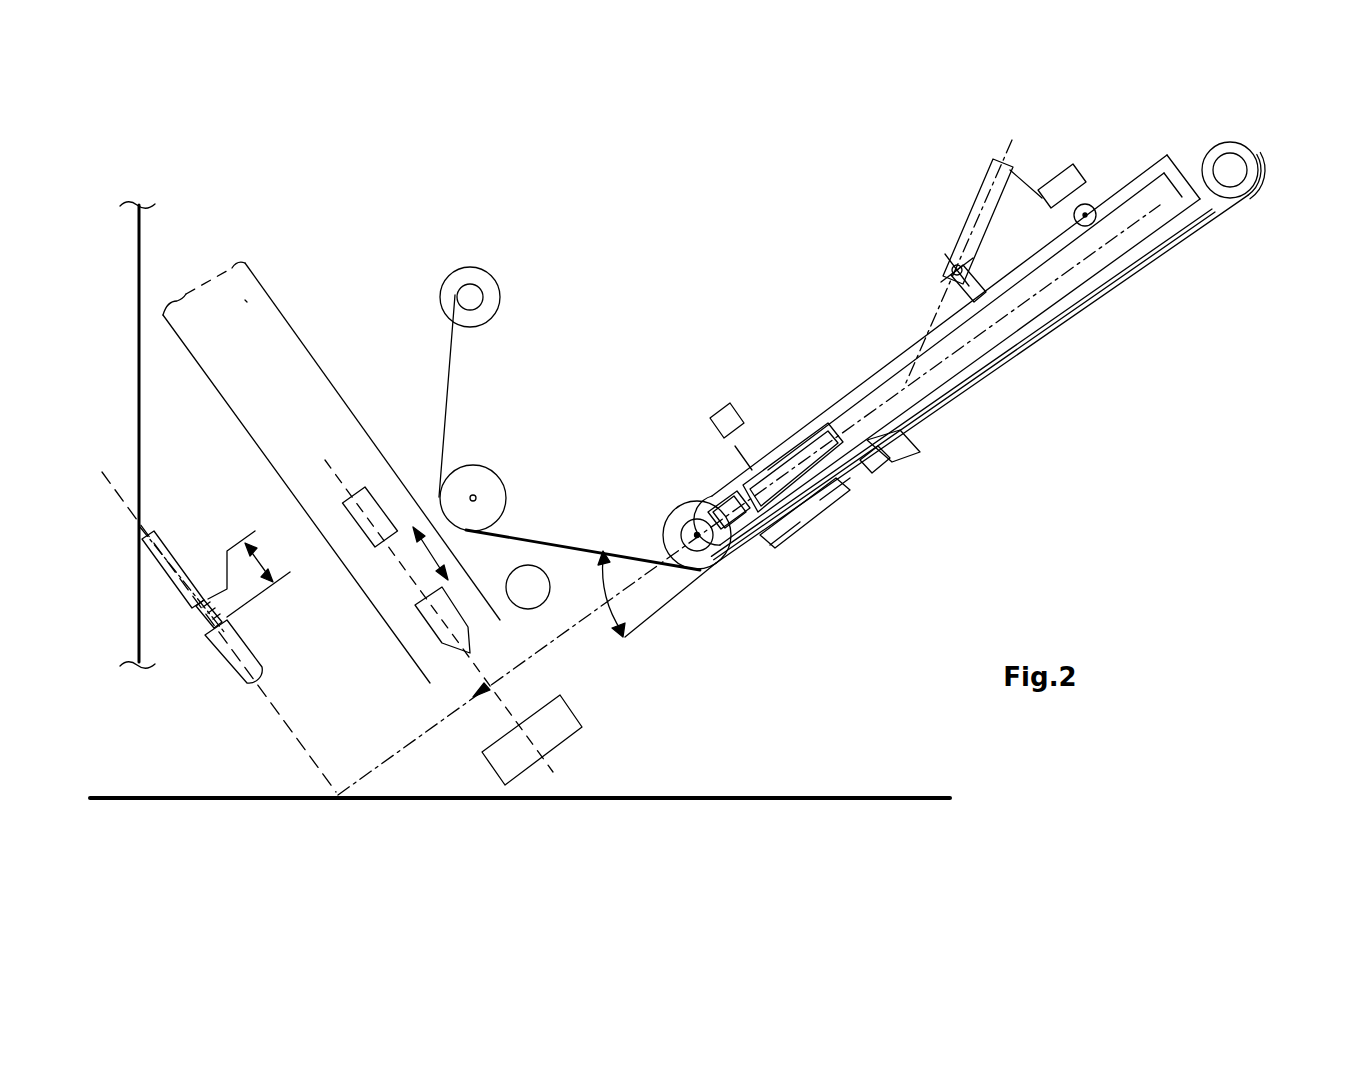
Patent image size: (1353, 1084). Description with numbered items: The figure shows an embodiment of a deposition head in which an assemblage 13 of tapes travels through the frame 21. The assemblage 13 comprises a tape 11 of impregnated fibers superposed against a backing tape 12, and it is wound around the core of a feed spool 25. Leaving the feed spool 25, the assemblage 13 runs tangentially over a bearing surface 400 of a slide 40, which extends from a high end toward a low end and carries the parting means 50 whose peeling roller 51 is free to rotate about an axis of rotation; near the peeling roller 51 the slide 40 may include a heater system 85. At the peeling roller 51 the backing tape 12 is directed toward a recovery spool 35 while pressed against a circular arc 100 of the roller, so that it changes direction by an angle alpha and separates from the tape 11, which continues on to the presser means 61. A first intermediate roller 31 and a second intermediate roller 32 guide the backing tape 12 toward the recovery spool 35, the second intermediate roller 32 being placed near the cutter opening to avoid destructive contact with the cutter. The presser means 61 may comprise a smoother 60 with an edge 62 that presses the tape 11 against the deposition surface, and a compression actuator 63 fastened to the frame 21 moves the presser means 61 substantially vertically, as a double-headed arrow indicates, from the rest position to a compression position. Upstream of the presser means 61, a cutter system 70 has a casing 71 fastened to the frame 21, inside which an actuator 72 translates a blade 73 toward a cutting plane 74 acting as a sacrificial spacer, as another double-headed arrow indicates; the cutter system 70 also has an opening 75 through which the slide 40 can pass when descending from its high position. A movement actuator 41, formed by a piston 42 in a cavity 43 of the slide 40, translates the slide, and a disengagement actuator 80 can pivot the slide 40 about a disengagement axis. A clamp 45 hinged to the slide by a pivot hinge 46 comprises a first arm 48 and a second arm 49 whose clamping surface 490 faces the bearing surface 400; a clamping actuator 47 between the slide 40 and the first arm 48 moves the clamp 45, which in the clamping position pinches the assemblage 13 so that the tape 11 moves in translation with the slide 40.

The tape of impregnated fibers 11 is at (655, 615).
The backing tape 12 is at (585, 548).
The assemblage of tapes 13 is at (1197, 241).
The frame 21 is at (139, 607).
The feed spool 25 is at (1262, 168).
The first intermediate roller 31 is at (503, 480).
The second intermediate roller 32 is at (528, 565).
The recovery spool 35 is at (478, 268).
The slide 40 is at (880, 371).
The movement actuator 41 is at (1132, 270).
The piston 42 is at (790, 455).
The cavity 43 is at (1050, 282).
The clamp 45 is at (930, 452).
The pivot hinge 46 is at (985, 287).
The clamping actuator 47 is at (1058, 192).
The first arm 48 is at (972, 222).
The second arm 49 is at (866, 462).
The parting means 50 is at (680, 472).
The peeling roller 51 is at (678, 497).
The smoother 60 is at (275, 643).
The presser means 61 is at (210, 642).
The edge 62 is at (268, 703).
The compression actuator 63 is at (178, 563).
The cutter system 70 is at (330, 346).
The casing 71 is at (285, 318).
The actuator 72 is at (342, 515).
The blade 73 is at (470, 660).
The cutting plane 74 is at (565, 700).
The opening 75 is at (452, 755).
The disengagement actuator 80 is at (728, 412).
The heater system 85 is at (722, 500).
The circular arc 100 is at (708, 582).
The bearing surface 400 is at (830, 503).
The clamping surface 490 is at (785, 525).